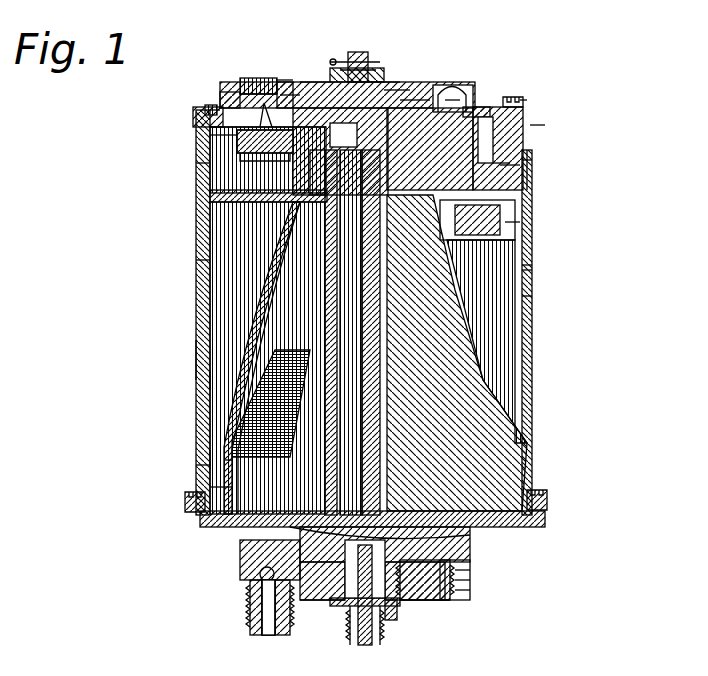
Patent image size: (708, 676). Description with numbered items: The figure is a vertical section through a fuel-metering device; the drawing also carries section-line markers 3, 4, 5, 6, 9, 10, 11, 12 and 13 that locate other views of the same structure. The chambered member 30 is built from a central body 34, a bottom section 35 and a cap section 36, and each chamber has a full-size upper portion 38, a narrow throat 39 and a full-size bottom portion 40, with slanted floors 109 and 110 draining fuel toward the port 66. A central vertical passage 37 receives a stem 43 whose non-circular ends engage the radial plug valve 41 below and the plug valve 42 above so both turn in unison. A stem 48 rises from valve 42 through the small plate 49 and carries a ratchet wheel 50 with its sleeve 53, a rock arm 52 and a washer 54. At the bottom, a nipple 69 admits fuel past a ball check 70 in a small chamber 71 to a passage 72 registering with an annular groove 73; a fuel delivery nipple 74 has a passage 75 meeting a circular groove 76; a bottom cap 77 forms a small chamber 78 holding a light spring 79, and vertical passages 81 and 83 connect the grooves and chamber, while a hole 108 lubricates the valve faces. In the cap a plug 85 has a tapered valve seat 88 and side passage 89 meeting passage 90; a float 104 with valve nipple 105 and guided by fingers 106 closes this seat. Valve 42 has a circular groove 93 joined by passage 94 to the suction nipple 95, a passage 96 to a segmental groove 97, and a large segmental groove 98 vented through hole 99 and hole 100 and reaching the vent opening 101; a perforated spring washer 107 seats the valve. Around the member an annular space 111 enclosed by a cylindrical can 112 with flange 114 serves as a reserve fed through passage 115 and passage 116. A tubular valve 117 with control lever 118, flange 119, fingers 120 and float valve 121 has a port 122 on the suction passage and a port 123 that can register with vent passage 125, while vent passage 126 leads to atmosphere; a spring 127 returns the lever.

The section line 3- 3 is at (576, 150).
The section line 4- 4 is at (354, 159).
The section line 5- 5 is at (533, 255).
The section line 6- 6 is at (176, 473).
The section line 9- 9 is at (537, 118).
The valve member 10 is at (340, 151).
The section line 11- 11 is at (227, 546).
The section line 12- 12 is at (227, 568).
The section line 13- 13 is at (227, 588).
The chambered member 30 is at (245, 395).
The central body 34 is at (200, 360).
The bottom section 35 is at (548, 522).
The cap section 36 is at (197, 152).
The central vertical passage 37 is at (390, 396).
The upper portion 38 is at (197, 183).
The throat 39 is at (300, 262).
The bottom portion 40 is at (205, 460).
The radial plug valve 41 is at (350, 610).
The plug valve 42 is at (403, 80).
The stem 43 is at (362, 372).
The stem 48 is at (360, 53).
The small plate 49 is at (300, 82).
The ratchet wheel 50 is at (310, 78).
The rock arm 52 is at (340, 77).
The sleeve 53 is at (343, 62).
The washer 54 is at (368, 64).
The port 66 is at (200, 487).
The nipple 69 is at (255, 632).
The ball check 70 is at (258, 600).
The small chamber 71 is at (250, 590).
The passage 72 is at (305, 600).
The annular groove 73 is at (465, 578).
The fuel delivery nipple 74 is at (465, 595).
The passage 75 is at (455, 598).
The circular groove 76 is at (425, 600).
The bottom cap 77 is at (435, 605).
The small chamber 78 is at (335, 605).
The light spring 79 is at (390, 610).
The vertical passage 81 is at (255, 580).
The vertical passage 83 is at (460, 585).
The plug 85 is at (243, 84).
The tapered valve seat 88 is at (212, 110).
The side passage 89 is at (250, 97).
The passage 90 is at (289, 80).
The circular groove 93 is at (503, 337).
The passage 94 is at (520, 110).
The suction nipple 95 is at (478, 95).
The passage 96 is at (285, 235).
The segmental groove 97 is at (296, 80).
The segmental groove 98 is at (535, 165).
The hole 99 is at (423, 90).
The hole 100 is at (445, 85).
The vent opening 101 is at (200, 226).
The float 104 is at (200, 150).
The valve nipple 105 is at (228, 92).
The fingers 106 is at (200, 138).
The spring washer 107 is at (373, 77).
The hole 108 is at (470, 535).
The floor 109 is at (200, 263).
The floor 110 is at (200, 510).
The annular space 111 is at (530, 345).
The cylindrical can 112 is at (205, 380).
The flange 114 is at (200, 118).
The passage 115 is at (210, 530).
The passage 116 is at (225, 470).
The tubular valve 117 is at (445, 215).
The control lever 118 is at (470, 82).
The flange 119 is at (579, 263).
The fingers 120 is at (528, 296).
The float valve 121 is at (540, 270).
The port 122 is at (530, 120).
The port 123 is at (440, 92).
The vent passage 125 is at (520, 225).
The vent passage 126 is at (530, 172).
The spring 127 is at (569, 81).